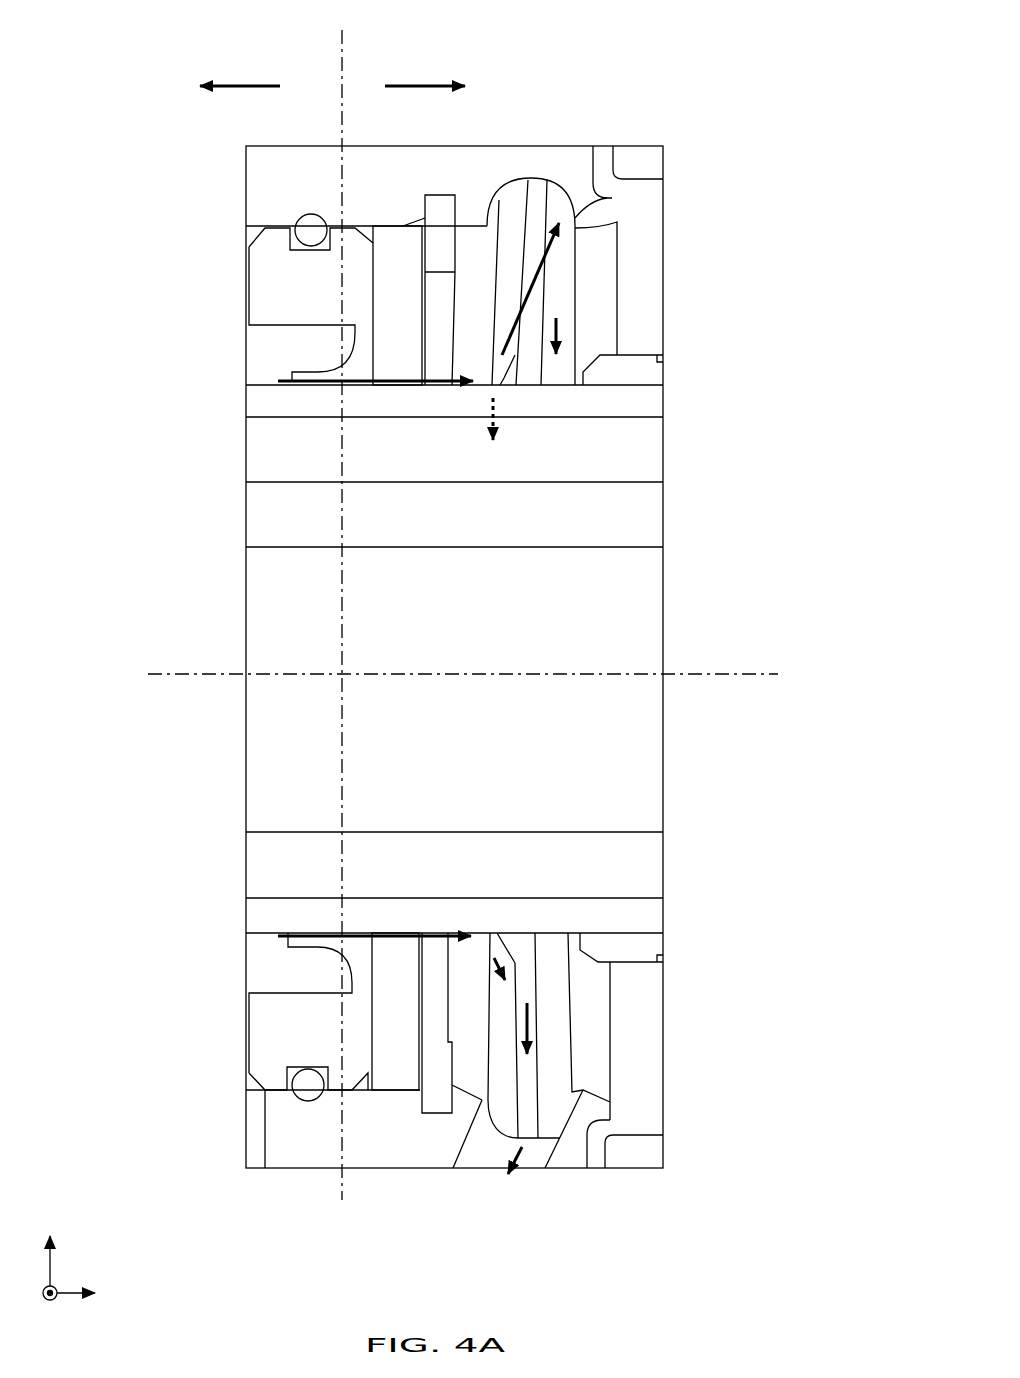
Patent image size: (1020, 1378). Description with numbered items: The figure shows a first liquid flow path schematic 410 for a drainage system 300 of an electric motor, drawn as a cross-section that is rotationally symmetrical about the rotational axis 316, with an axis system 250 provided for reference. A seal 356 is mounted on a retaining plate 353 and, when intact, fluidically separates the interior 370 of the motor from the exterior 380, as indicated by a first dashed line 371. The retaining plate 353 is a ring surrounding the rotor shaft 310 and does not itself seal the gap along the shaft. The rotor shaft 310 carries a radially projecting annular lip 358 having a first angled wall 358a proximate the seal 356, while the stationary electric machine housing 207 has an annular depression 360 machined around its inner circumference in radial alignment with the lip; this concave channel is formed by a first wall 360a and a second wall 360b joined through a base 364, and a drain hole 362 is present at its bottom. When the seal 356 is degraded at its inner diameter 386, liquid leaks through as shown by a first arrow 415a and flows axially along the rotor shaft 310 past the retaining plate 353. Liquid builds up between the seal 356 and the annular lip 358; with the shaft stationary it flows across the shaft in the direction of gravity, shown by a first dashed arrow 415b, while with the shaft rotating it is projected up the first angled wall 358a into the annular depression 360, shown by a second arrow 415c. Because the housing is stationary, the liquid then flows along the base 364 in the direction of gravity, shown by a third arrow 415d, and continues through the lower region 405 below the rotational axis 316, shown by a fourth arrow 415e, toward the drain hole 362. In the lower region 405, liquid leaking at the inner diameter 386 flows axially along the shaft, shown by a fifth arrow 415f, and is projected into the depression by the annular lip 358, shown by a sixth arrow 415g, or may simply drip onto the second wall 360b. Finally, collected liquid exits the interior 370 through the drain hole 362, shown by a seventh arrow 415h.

The electric machine housing 207 is at (317, 194).
The seal 356 is at (315, 309).
The retaining plate 353 is at (417, 309).
The first wall 360a is at (492, 222).
The base 364 is at (537, 178).
The annular lip 358 is at (515, 357).
The first angled wall 358a is at (500, 368).
The annular depression 360 is at (578, 280).
The second wall 360b is at (607, 198).
The rotor shaft 310 is at (645, 399).
The first arrow 415a is at (355, 378).
The first dashed arrow 415b is at (500, 442).
The second arrow 415c is at (547, 252).
The third arrow 415d is at (559, 336).
The fourth arrow 415e is at (532, 1040).
The fifth arrow 415f is at (363, 933).
The sixth arrow 415g is at (495, 962).
The seventh arrow 415h is at (500, 1185).
The drain hole 362 is at (533, 1172).
The inner diameter 386 is at (252, 370).
The first dashed line 371 is at (342, 33).
The rotational axis 316 is at (676, 672).
The exterior 380 is at (228, 85).
The interior 370 is at (445, 84).
The first liquid flow path schematic 410 is at (795, 30).
The drainage system 300 is at (692, 116).
The lower region 405 is at (185, 773).
The axis system 250 is at (130, 1228).